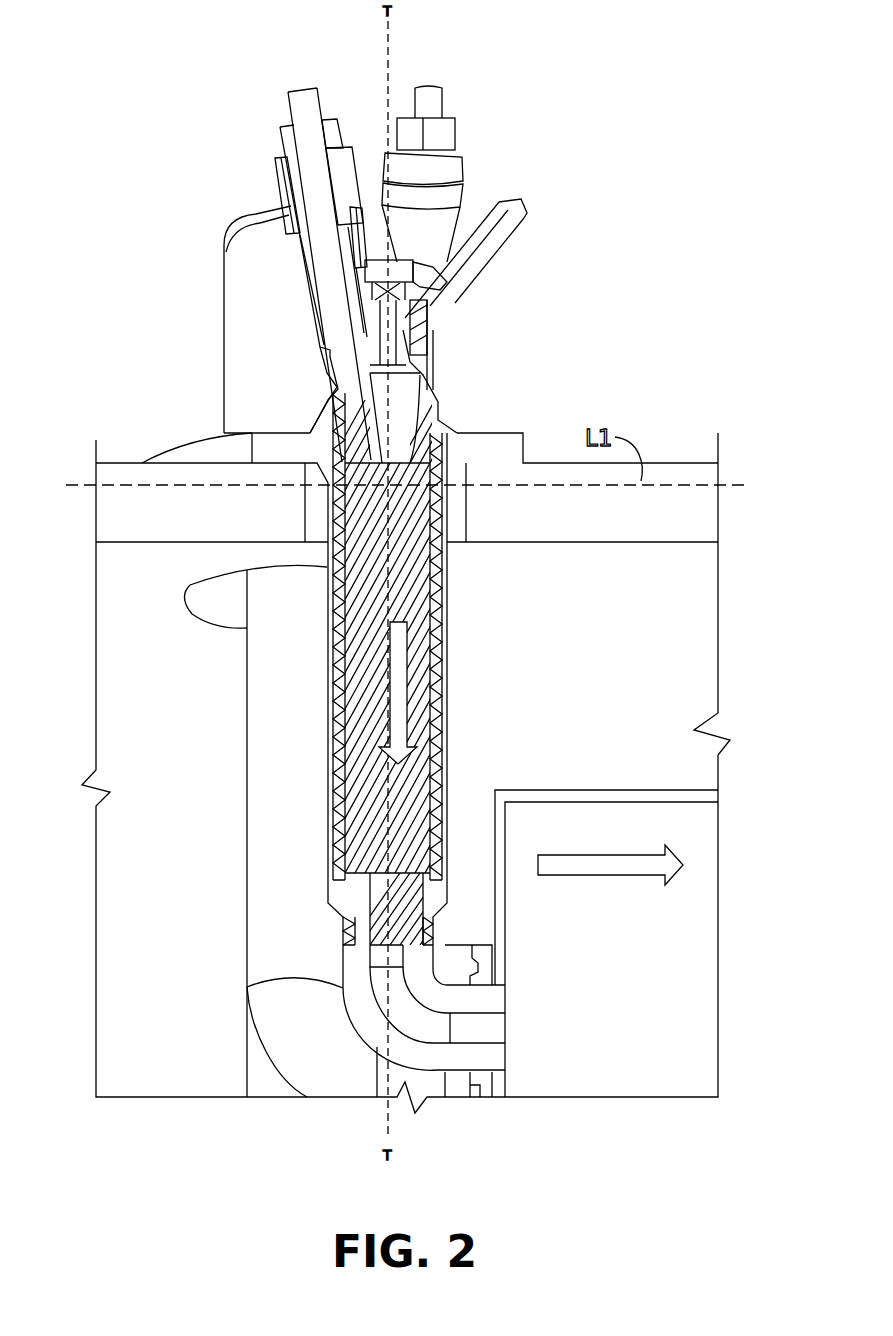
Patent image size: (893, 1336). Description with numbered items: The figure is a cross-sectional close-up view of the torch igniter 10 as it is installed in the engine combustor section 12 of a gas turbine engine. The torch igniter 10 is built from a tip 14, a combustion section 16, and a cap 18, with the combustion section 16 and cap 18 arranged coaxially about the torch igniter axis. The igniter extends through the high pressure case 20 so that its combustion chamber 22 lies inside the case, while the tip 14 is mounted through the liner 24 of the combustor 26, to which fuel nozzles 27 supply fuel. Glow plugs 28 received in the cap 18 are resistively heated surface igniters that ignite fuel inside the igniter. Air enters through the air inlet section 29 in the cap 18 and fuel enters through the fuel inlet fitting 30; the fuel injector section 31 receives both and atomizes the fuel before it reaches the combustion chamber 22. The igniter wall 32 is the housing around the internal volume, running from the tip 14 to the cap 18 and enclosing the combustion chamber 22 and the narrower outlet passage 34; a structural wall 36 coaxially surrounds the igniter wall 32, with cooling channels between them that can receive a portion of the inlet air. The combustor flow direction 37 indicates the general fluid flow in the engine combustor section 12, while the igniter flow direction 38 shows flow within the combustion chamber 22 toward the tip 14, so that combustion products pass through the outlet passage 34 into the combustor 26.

The torch igniter 10 is at (630, 107).
The engine combustor section 12 is at (194, 1137).
The tip 14 is at (340, 1006).
The combustion section 16 is at (273, 515).
The cap 18 is at (256, 299).
The high pressure case 20 is at (131, 478).
The combustion chamber 22 is at (404, 529).
The liner 24 is at (597, 790).
The combustor 26 is at (638, 1080).
The fuel nozzles 27 is at (281, 810).
The glow plugs 28 is at (303, 90).
The air inlet section 29 is at (388, 250).
The fuel inlet fitting 30 is at (492, 252).
The fuel injector section 31 is at (407, 315).
The igniter wall 32 is at (327, 843).
The outlet passage 34 is at (429, 1044).
The structural wall 36 is at (327, 728).
The combustor flow direction 37 is at (641, 876).
The igniter flow direction 38 is at (433, 688).